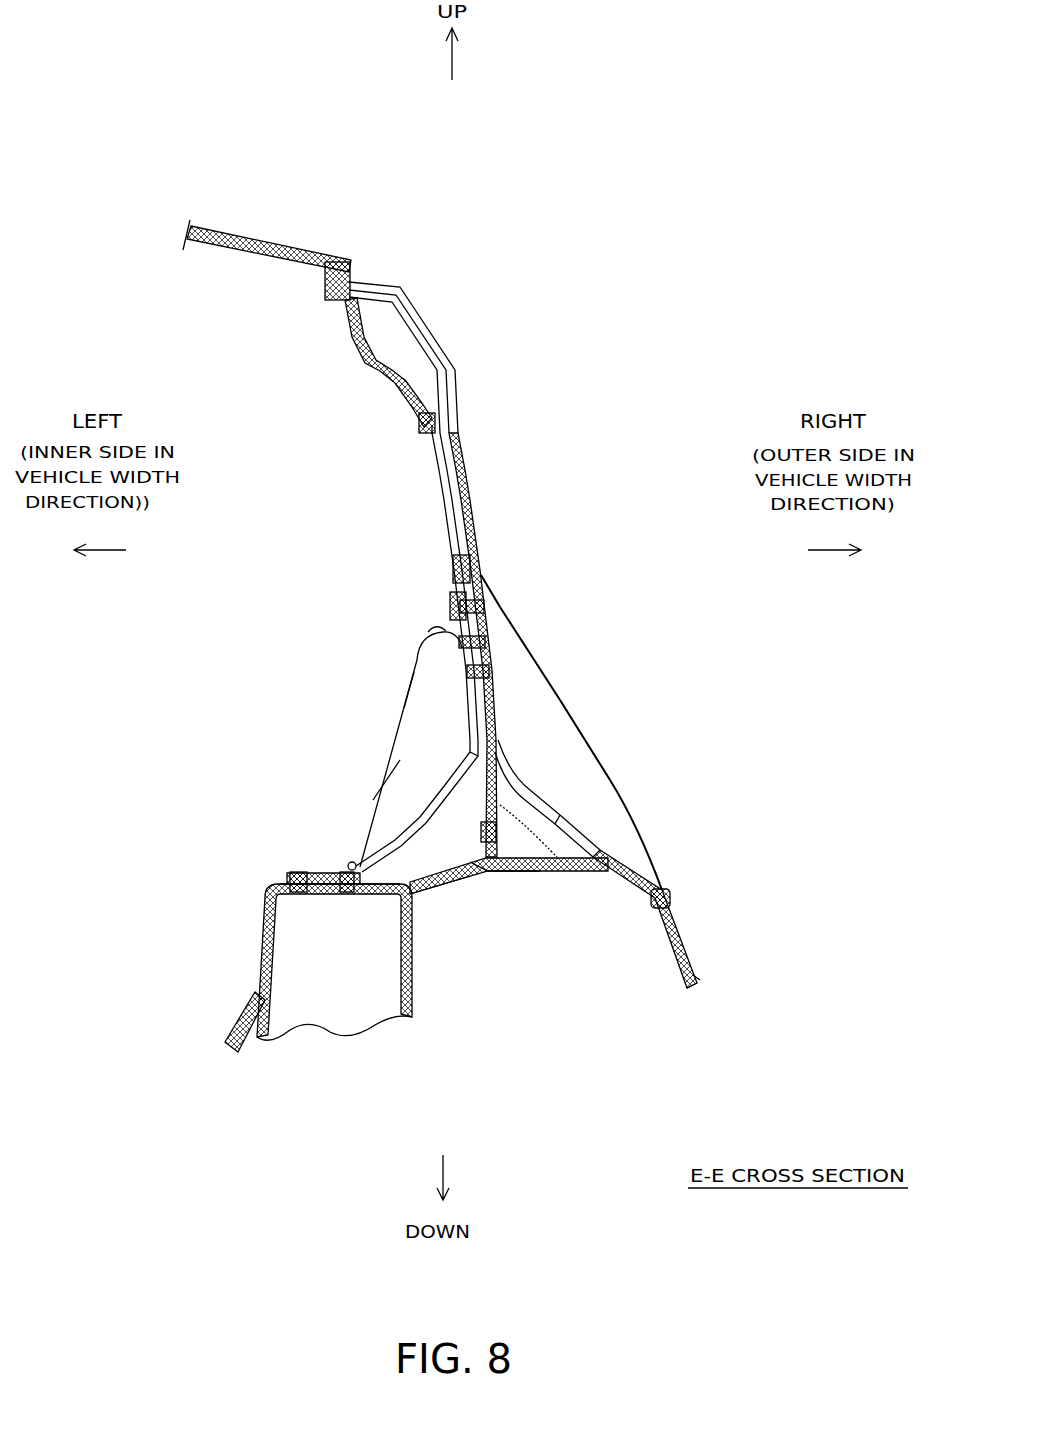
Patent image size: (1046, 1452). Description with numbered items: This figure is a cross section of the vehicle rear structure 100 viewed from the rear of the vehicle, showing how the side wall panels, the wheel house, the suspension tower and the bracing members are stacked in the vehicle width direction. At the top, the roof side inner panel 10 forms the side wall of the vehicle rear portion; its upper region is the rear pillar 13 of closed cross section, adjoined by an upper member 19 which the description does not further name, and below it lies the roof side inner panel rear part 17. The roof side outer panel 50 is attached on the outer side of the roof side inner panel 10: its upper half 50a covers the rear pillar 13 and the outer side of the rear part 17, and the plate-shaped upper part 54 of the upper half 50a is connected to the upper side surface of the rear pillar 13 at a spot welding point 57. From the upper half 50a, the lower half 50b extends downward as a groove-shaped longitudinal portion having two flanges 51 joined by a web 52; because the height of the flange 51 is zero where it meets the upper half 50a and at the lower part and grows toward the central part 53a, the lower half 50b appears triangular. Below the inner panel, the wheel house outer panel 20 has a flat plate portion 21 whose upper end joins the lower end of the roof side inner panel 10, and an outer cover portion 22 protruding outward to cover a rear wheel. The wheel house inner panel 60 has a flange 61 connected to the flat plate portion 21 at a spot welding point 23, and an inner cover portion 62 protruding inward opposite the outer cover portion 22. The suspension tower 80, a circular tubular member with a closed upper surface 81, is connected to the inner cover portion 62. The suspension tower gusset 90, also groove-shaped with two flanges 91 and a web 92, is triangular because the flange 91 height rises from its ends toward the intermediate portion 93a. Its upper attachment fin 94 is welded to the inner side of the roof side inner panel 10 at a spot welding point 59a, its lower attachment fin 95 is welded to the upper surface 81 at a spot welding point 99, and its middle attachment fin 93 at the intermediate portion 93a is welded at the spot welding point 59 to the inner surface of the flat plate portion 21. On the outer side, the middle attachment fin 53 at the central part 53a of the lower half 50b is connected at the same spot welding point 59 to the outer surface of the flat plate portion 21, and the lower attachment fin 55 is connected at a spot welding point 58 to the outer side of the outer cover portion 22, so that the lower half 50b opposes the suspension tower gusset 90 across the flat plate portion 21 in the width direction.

The vehicle rear structure 100 is at (618, 128).
The roof side inner panel 10 is at (428, 462).
The rear pillar 13 is at (352, 342).
The roof side inner panel rear part 17 is at (474, 465).
The roof panel 19 is at (278, 252).
The wheel house outer panel 20 is at (700, 968).
The flat plate portion 21 is at (561, 873).
The outer cover portion 22 is at (692, 958).
The spot welding point 23 is at (520, 875).
The roof side outer panel 50 is at (545, 650).
The upper half 50a is at (462, 356).
The lower half 50b is at (628, 802).
The flange 51 is at (600, 765).
The web 52 is at (572, 718).
The middle attachment fin 53 is at (490, 613).
The central part 53a is at (558, 742).
The upper part 54 is at (400, 290).
The lower attachment fin 55 is at (637, 872).
The spot welding point 57 is at (370, 279).
The spot welding point 58 is at (670, 896).
The spot welding point 59 is at (548, 680).
The spot welding point 59a is at (485, 576).
The wheel house inner panel 60 is at (224, 1025).
The flange 61 is at (493, 875).
The inner cover portion 62 is at (447, 882).
The suspension tower 80 is at (258, 935).
The upper surface 81 is at (272, 886).
The suspension tower gusset 90 is at (374, 797).
The flange 91 is at (413, 767).
The web 92 is at (410, 683).
The middle attachment fin 93 is at (457, 663).
The intermediate portion 93a is at (437, 727).
The upper attachment fin 94 is at (450, 610).
The lower attachment fin 95 is at (298, 870).
The spot welding point 99 is at (283, 874).